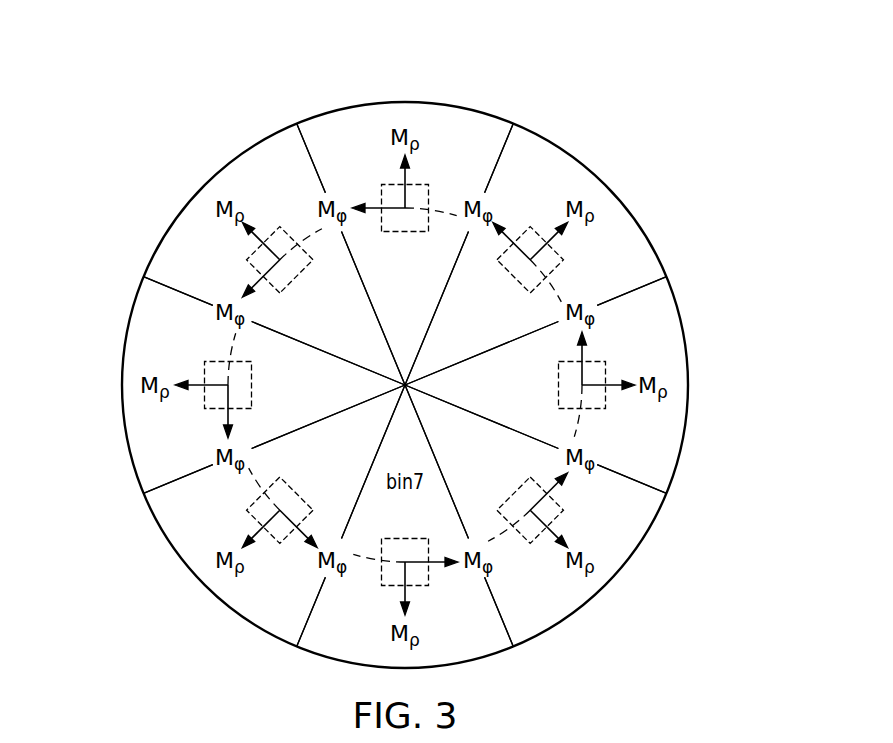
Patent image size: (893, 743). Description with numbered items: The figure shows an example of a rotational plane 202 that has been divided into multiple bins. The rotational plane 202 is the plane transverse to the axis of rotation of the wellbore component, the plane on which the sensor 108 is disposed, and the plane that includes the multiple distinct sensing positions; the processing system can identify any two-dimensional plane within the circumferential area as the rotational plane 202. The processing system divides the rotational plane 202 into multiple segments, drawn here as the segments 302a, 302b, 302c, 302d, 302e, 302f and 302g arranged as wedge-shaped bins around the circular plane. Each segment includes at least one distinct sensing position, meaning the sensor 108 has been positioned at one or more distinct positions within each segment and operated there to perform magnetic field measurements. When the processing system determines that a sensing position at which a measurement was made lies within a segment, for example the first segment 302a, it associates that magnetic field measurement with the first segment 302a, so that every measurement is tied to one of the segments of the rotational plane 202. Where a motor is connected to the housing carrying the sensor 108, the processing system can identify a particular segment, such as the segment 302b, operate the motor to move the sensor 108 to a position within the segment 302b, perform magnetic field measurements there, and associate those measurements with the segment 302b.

The rotational plane 202 is at (688, 300).
The sensor 108 is at (604, 409).
The first segment 302a is at (560, 613).
The segment 302b is at (687, 360).
The segment 302c is at (560, 158).
The segment 302d is at (403, 110).
The segment 302e is at (252, 158).
The segment 302f is at (124, 360).
The segment 302g is at (250, 613).